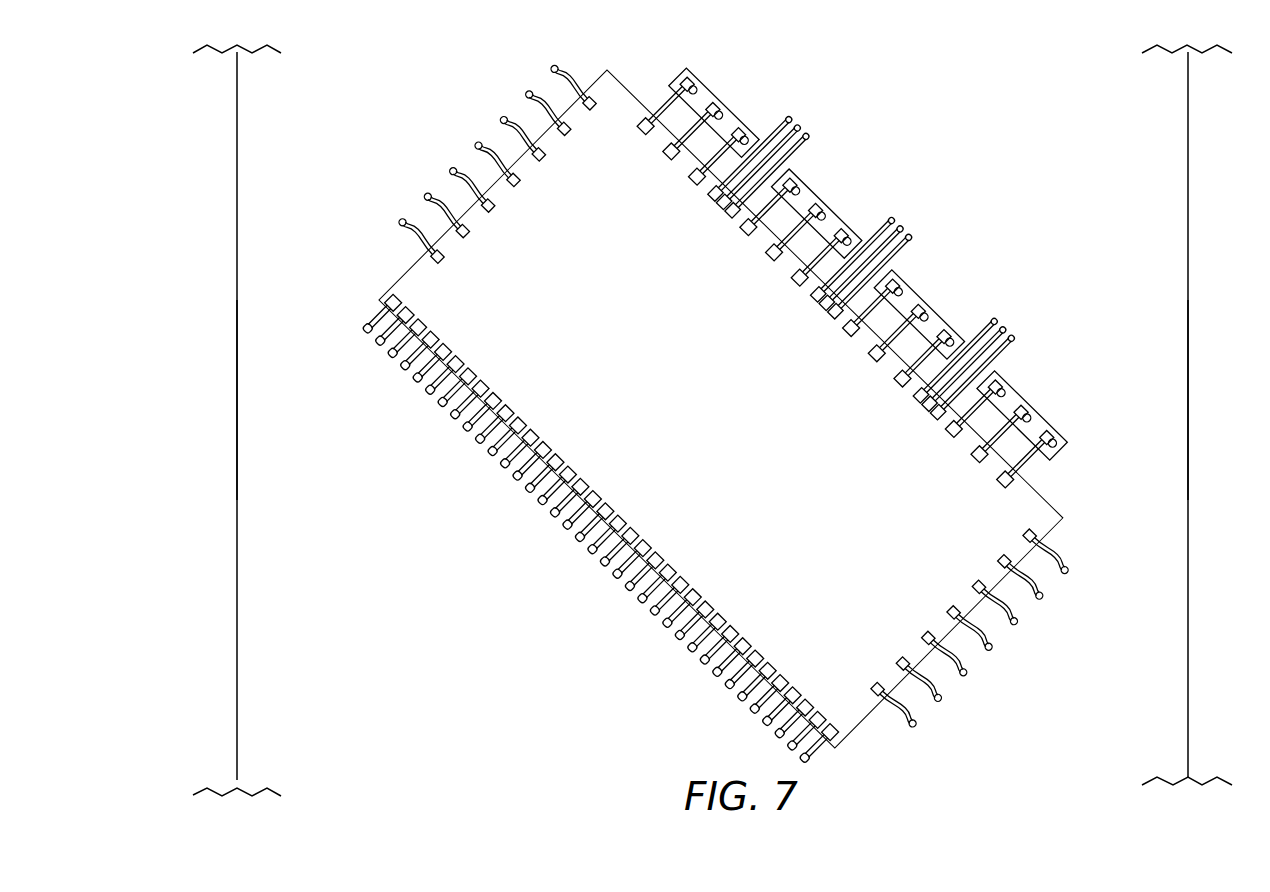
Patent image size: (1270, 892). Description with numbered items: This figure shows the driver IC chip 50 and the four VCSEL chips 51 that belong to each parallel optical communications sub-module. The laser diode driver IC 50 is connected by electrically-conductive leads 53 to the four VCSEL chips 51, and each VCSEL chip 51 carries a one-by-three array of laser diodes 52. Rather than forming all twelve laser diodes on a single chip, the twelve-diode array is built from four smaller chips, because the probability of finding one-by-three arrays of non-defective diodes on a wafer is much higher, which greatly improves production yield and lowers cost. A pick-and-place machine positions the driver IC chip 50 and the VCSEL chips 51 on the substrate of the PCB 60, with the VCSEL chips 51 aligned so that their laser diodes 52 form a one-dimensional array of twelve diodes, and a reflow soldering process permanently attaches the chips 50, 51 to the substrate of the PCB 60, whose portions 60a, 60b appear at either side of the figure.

The driver IC chip 50 is at (718, 413).
The VCSEL chip 51 is at (675, 84).
The laser diode 52 is at (742, 133).
The electrically-conductive lead 53 is at (668, 103).
The PCB 60 is at (237, 128).
The first wiring line 60a is at (237, 608).
The second wiring line 60b is at (1188, 640).